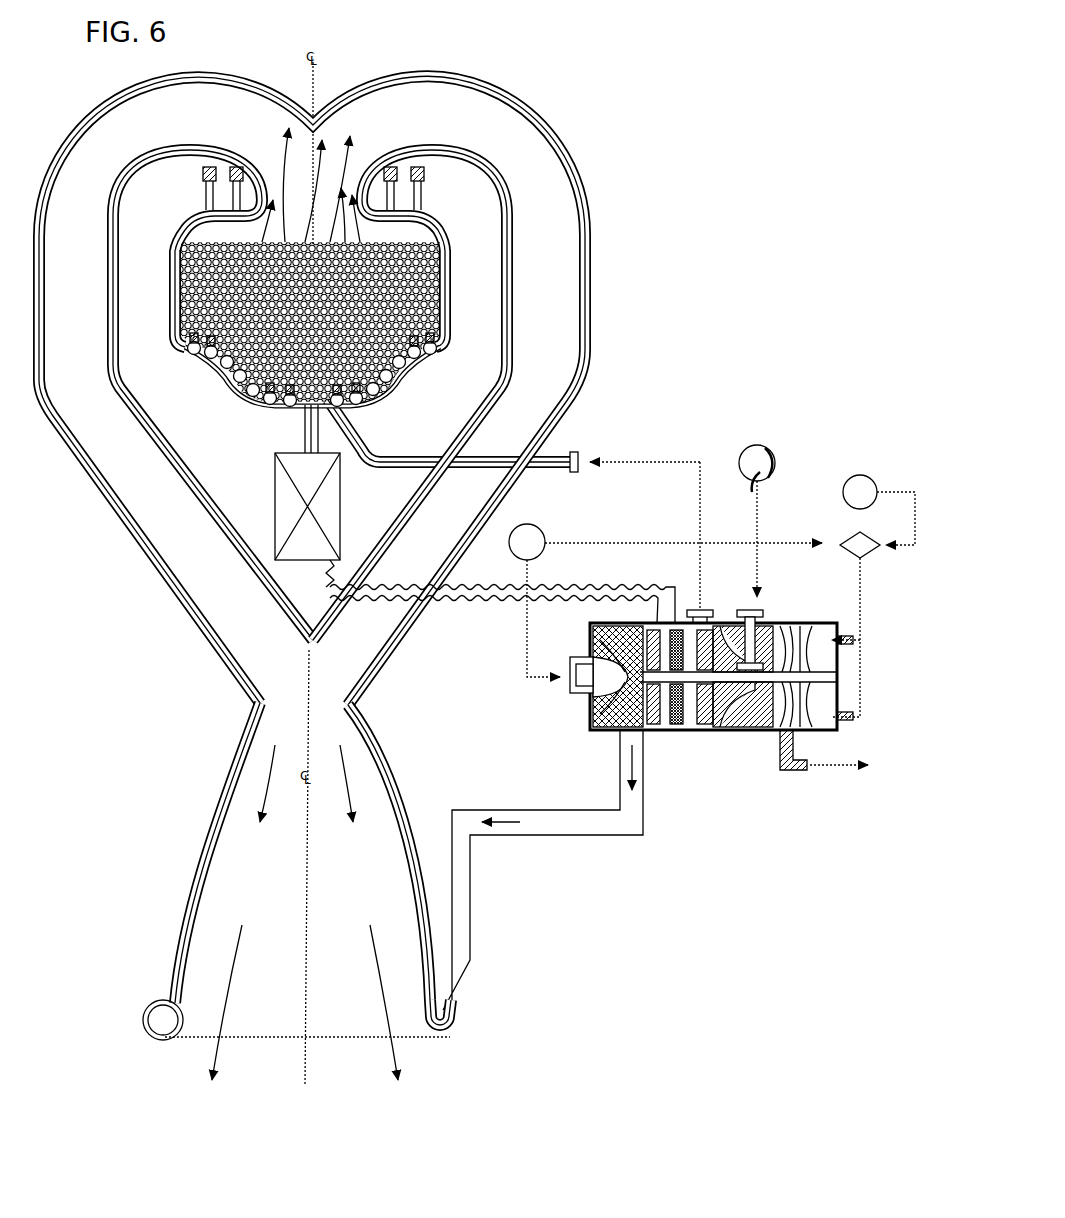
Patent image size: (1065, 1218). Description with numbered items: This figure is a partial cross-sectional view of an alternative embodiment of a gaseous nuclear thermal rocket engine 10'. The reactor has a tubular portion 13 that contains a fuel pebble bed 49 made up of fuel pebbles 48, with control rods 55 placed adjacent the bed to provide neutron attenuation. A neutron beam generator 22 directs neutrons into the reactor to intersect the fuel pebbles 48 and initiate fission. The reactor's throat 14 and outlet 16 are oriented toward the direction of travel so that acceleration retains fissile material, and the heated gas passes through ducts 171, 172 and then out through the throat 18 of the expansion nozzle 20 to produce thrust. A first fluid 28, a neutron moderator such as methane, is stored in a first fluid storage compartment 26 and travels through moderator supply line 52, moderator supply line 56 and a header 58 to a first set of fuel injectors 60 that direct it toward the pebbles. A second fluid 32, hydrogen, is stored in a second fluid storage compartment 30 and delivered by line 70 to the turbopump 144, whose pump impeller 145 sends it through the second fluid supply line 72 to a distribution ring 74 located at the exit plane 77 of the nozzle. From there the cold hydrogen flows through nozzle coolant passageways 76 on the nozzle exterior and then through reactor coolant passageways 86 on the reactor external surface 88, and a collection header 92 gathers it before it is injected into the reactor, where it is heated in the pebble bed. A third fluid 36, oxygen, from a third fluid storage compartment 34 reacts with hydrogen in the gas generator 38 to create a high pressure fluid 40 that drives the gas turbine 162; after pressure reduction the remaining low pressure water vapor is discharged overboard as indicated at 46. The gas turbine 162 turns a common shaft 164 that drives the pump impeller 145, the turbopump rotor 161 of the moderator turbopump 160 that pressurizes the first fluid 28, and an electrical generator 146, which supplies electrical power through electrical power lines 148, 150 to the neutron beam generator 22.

The rocket engine 10' is at (394, 499).
The tubular portion 13 is at (452, 278).
The throat 14 is at (272, 188).
The outlet 16 is at (358, 165).
The duct 171 is at (124, 156).
The duct 172 is at (461, 136).
The throat 18 is at (268, 706).
The expansion nozzle 20 is at (200, 918).
The neutron beam generator 22 is at (274, 484).
The first fluid storage compartment 26 is at (760, 445).
The first fluid 28 is at (752, 485).
The second fluid storage compartment 30 is at (538, 528).
The second fluid 32 is at (543, 550).
The third fluid storage compartment 34 is at (866, 478).
The third fluid 36 is at (850, 505).
The gas generator 38 is at (868, 534).
The high pressure fluid 40 is at (862, 610).
The low pressure water vapor discharge 46 is at (835, 768).
The fuel pebbles 48 is at (180, 230).
The fuel pebble bed 49 is at (445, 248).
The moderator supply line 52 is at (304, 430).
The control rods 55 is at (206, 193).
The moderator supply line 56 is at (398, 470).
The header 58 is at (256, 418).
The first set of fuel injectors 60 is at (282, 410).
The line 70 is at (556, 682).
The second fluid supply line 72 is at (520, 810).
The distribution ring 74 is at (148, 1008).
The nozzle coolant passageways 76 is at (392, 795).
The exit plane 77 is at (412, 1040).
The reactor coolant passageways 86 is at (170, 300).
The reactor external surface 88 is at (178, 330).
The collection header 92 is at (248, 404).
The turbopump 144 is at (796, 622).
The pump impeller 145 is at (594, 632).
The electrical generator 146 is at (684, 742).
The electrical power line 148 is at (478, 586).
The electrical power line 150 is at (470, 600).
The turbopump 160 is at (718, 612).
The turbopump rotor 161 is at (706, 730).
The gas turbine 162 is at (805, 730).
The common shaft 164 is at (840, 676).